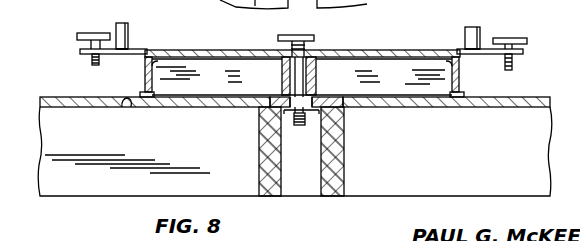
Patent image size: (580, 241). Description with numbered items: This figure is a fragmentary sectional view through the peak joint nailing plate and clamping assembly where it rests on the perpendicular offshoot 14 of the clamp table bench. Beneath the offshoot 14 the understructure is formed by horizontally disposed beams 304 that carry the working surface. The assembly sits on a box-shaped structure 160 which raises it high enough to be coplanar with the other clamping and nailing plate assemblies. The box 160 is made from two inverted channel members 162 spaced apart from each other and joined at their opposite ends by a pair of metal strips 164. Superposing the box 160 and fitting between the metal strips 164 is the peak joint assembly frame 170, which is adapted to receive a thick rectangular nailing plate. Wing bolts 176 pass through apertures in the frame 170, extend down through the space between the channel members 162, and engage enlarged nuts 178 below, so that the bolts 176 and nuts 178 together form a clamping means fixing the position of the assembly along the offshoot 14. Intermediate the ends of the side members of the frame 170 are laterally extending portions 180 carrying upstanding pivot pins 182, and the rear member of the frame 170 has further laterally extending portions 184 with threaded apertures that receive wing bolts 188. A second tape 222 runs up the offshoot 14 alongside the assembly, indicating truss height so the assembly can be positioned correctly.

The perpendicular offshoot 14 is at (38, 107).
The horizontally disposed beams 304 is at (202, 166).
The enlarged nuts 178 is at (285, 114).
The second tape 222 is at (125, 107).
The box-shaped structure 160 is at (460, 90).
The peak joint assembly frame 170 is at (404, 49).
The metal strips 164 is at (223, 84).
The inverted channel members 162 is at (282, 72).
The wing bolts 176 is at (304, 56).
The laterally extending portions 184 is at (80, 52).
The laterally extending portions 180 is at (127, 51).
The upstanding pivot pins 182 is at (128, 32).
The wing bolts 188 is at (100, 33).